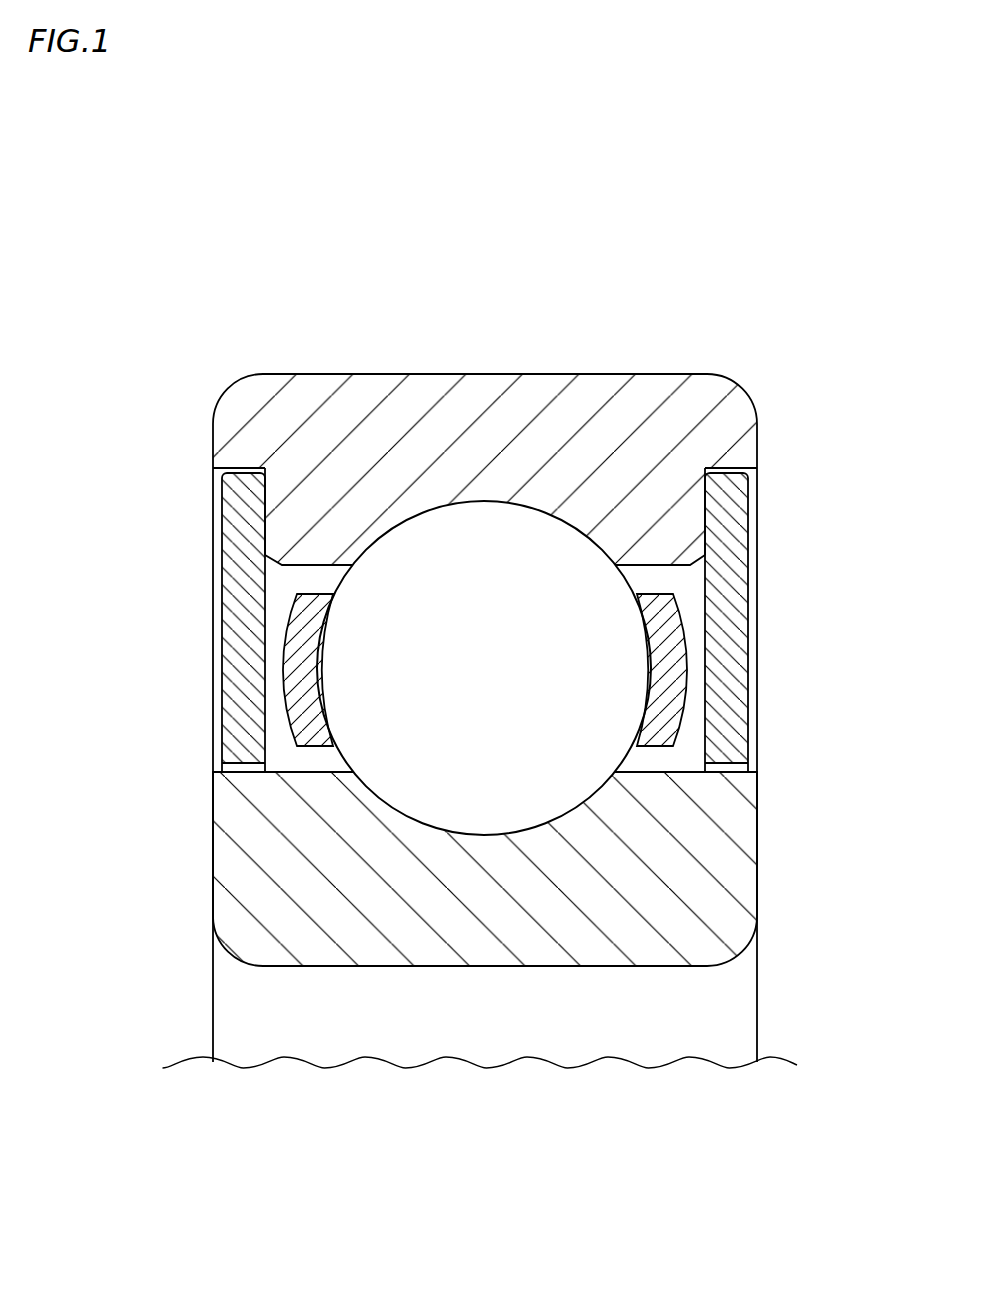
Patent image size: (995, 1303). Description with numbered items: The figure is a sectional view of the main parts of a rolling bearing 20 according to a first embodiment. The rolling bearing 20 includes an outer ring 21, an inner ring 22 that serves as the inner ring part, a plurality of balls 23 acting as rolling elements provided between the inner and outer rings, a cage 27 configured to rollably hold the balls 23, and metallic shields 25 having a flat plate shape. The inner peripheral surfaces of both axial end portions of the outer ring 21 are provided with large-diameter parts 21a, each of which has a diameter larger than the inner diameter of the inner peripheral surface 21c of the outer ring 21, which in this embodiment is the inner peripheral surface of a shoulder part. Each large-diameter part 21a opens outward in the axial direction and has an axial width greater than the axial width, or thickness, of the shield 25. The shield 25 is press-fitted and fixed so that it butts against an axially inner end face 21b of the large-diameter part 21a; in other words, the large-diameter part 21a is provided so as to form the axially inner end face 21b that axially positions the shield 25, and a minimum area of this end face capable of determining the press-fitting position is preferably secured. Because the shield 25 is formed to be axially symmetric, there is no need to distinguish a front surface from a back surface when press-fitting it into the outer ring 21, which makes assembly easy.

The rolling bearing 20 is at (635, 268).
The outer ring 21 is at (370, 390).
The large-diameter part 21a is at (243, 477).
The axially inner end face 21b is at (267, 533).
The inner peripheral surface 21c is at (298, 570).
The inner ring 22 is at (317, 947).
The ball 23 is at (475, 775).
The metallic shield 25 is at (237, 708).
The cage 27 is at (665, 735).